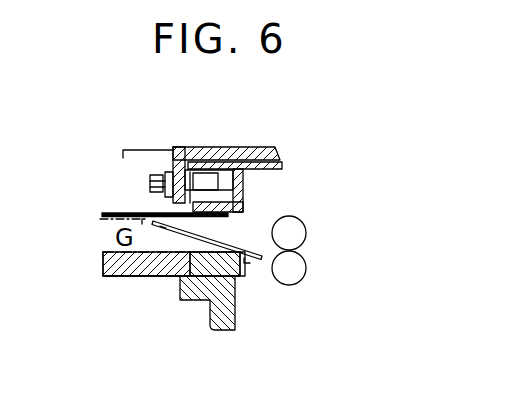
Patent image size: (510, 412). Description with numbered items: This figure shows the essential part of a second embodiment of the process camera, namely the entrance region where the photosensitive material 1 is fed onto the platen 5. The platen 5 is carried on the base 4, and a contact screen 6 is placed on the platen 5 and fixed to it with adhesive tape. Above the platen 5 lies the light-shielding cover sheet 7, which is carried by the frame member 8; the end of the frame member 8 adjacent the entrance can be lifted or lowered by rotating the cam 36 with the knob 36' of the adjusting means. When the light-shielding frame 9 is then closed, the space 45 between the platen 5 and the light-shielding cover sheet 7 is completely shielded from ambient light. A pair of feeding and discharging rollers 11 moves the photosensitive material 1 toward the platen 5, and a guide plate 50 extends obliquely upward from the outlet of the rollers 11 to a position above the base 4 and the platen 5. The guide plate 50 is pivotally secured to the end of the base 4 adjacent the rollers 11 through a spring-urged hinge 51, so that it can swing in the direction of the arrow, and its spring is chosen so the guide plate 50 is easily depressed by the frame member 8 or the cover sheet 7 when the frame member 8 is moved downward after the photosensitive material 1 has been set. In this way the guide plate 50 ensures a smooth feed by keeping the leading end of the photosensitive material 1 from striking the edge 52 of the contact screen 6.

The photosensitive material 1 is at (100, 215).
The base 4 is at (236, 298).
The platen 5 is at (118, 277).
The contact screen 6 is at (110, 252).
The light-shielding cover sheet 7 is at (133, 211).
The frame member 8 is at (247, 183).
The light-shielding frame 9 is at (222, 147).
The feeding and discharging rollers 11 is at (305, 268).
The cam 36 is at (195, 145).
The knob 36' is at (137, 150).
The space 45 is at (163, 228).
The guide plate 50 is at (142, 223).
The spring-urged hinge 51 is at (247, 263).
The edge of the contact screen 52 is at (190, 232).